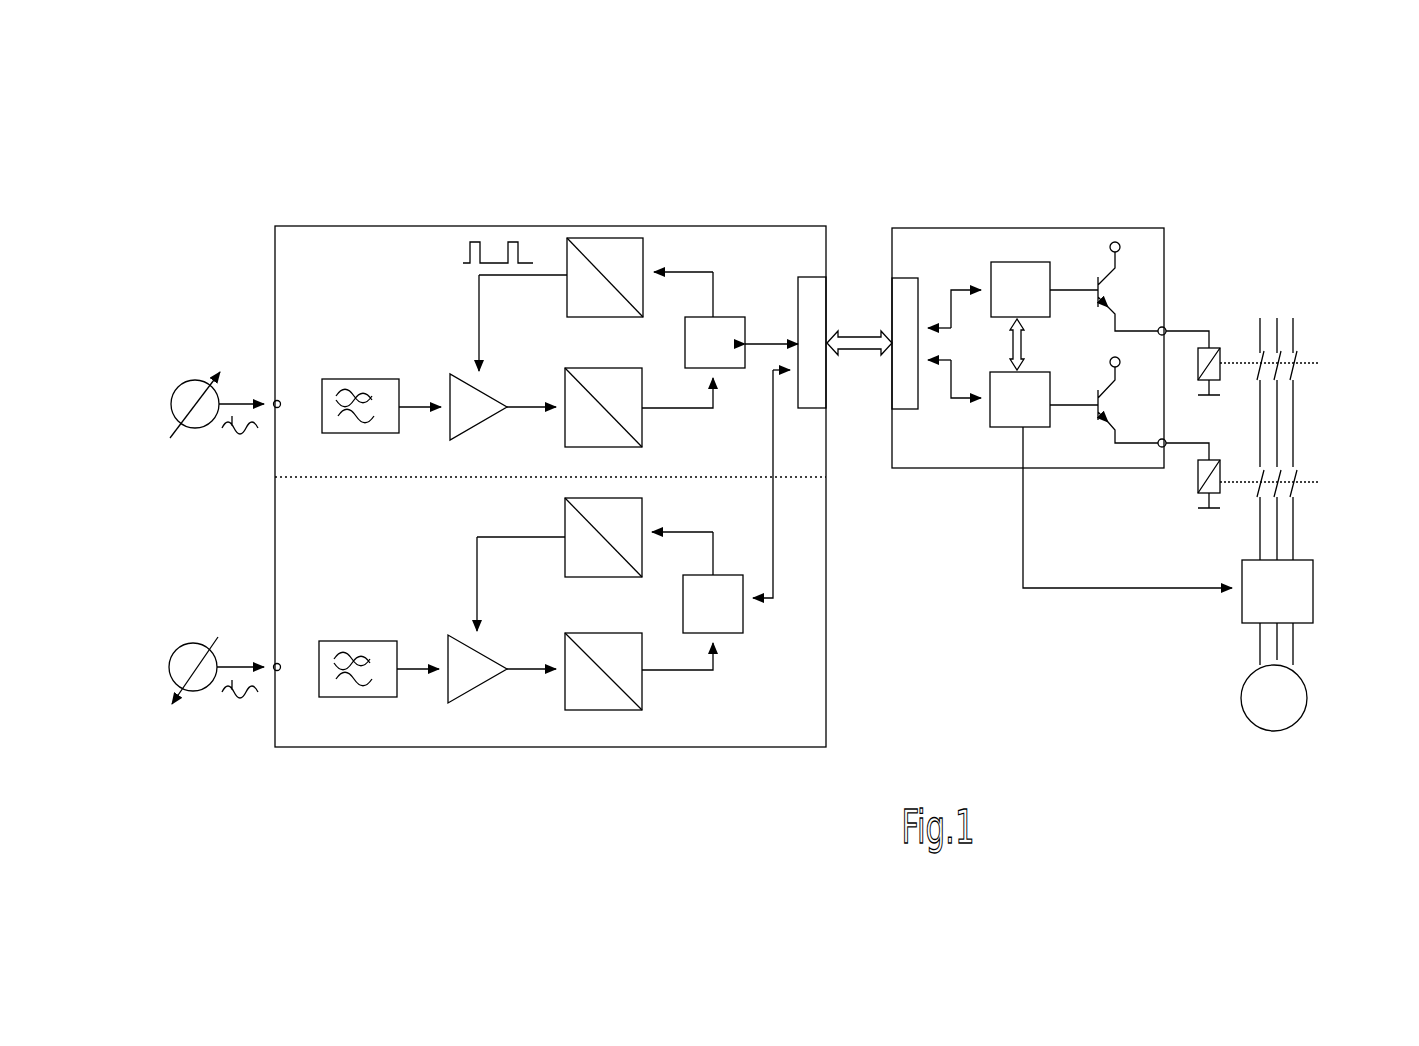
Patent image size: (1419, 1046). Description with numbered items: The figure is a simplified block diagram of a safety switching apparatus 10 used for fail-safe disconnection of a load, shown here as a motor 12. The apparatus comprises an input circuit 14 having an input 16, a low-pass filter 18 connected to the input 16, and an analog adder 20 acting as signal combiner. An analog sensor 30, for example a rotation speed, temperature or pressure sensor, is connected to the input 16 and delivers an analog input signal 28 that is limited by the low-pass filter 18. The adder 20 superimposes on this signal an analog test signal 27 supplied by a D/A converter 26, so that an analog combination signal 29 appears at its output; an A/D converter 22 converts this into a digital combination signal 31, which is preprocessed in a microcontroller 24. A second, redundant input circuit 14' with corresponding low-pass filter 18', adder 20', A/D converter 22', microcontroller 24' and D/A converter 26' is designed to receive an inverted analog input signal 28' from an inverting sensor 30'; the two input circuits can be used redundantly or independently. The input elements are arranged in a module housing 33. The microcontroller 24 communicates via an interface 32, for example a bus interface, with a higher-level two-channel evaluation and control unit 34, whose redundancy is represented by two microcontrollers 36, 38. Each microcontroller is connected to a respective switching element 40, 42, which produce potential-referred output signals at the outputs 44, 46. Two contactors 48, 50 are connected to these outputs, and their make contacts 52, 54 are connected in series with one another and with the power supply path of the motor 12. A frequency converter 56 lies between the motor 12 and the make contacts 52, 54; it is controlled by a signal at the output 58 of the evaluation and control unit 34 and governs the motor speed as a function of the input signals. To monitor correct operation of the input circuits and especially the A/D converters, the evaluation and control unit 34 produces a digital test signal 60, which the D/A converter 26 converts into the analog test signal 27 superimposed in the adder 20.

The safety switching apparatus 10 is at (258, 163).
The motor 12 is at (1300, 718).
The input circuit 14 is at (550, 291).
The redundant input circuit 14' is at (363, 567).
The input 16 is at (272, 402).
The low-pass filter 18 is at (295, 328).
The low-pass filter 18' is at (358, 730).
The analog adder 20 is at (485, 442).
The analog adder 20' is at (486, 724).
The A/D converter 22 is at (642, 415).
The A/D converter 22' is at (639, 744).
The microcontroller 24 is at (741, 239).
The microcontroller 24' is at (743, 702).
The D/A converter 26 is at (640, 214).
The D/A converter 26' is at (612, 565).
The analog test signal 27 is at (477, 240).
The analog input signal 28 is at (201, 460).
The inverted analog input signal 28' is at (233, 731).
The analog combination signal 29 is at (522, 407).
The analog sensor 30 is at (182, 378).
The inverting sensor 30' is at (176, 654).
The digital combination signal 31 is at (713, 393).
The interface 32 is at (815, 277).
The module housing 33 is at (435, 226).
The evaluation and control unit 34 is at (1006, 228).
The microcontroller 36 is at (1035, 262).
The microcontroller 38 is at (998, 422).
The switching element 40 is at (1120, 260).
The switching element 42 is at (1096, 410).
The output 44 is at (1165, 331).
The output 46 is at (1160, 447).
The contactor 48 is at (1215, 348).
The contactor 50 is at (1198, 492).
The make contact 52 is at (1310, 345).
The make contact 54 is at (1310, 462).
The frequency converter 56 is at (1313, 590).
The output 58 is at (1027, 468).
The digital test signal 60 is at (683, 271).